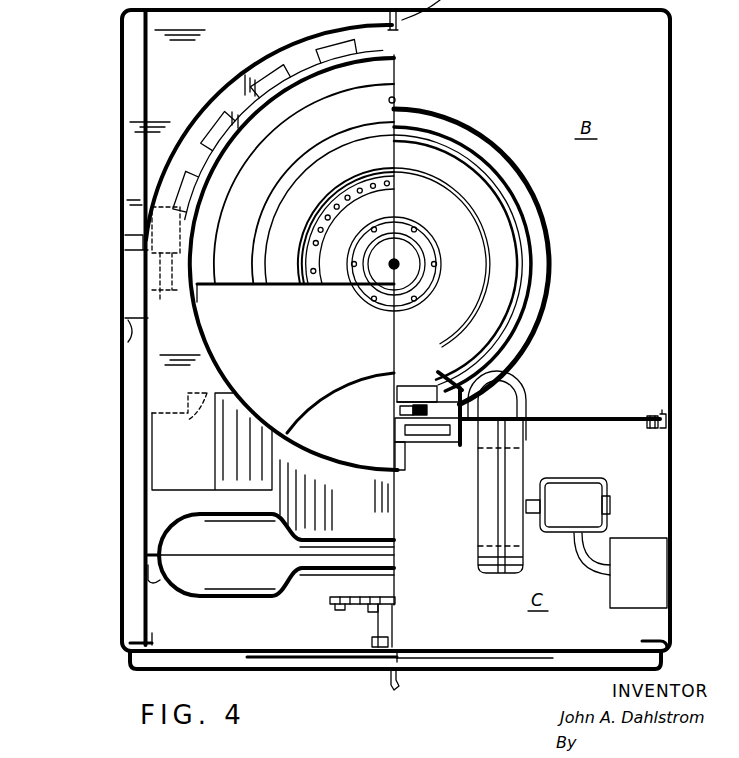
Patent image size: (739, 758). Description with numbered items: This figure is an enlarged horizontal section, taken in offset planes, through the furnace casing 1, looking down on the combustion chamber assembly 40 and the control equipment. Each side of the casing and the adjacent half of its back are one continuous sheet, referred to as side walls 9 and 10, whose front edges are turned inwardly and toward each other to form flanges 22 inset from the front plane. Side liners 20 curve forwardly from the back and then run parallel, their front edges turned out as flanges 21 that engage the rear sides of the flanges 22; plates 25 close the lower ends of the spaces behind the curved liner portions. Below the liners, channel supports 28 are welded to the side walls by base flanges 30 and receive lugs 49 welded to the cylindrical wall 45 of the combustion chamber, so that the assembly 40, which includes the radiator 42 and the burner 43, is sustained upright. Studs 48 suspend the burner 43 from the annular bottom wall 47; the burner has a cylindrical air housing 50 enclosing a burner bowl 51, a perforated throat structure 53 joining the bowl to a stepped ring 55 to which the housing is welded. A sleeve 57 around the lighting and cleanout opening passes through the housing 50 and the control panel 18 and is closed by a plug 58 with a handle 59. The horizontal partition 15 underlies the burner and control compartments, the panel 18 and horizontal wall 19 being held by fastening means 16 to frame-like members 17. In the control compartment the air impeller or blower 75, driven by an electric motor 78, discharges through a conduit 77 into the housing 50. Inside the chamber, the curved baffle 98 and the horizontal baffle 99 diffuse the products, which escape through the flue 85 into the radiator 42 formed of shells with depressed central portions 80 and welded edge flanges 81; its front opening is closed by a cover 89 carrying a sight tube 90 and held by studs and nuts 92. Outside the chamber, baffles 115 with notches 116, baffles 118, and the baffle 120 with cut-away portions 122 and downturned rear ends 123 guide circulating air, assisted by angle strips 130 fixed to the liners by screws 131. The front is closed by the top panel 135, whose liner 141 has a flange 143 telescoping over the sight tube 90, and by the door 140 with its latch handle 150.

The casing 1 is at (684, 142).
The side wall 9 is at (125, 183).
The side wall 10 is at (672, 215).
The horizontal partition 15 is at (648, 318).
The fastening means 16 is at (668, 428).
The frame-like members 17 is at (646, 432).
The control panel 18 is at (606, 416).
The horizontal wall 19 is at (295, 636).
The side liners 20 is at (208, 100).
The flanges 21 is at (128, 636).
The flanges 22 is at (150, 640).
The plates 25 is at (155, 73).
The supports 28 is at (135, 252).
The base flanges 30 is at (127, 335).
The combustion chamber assembly 40 is at (410, 73).
The radiator 42 is at (246, 596).
The burner 43 is at (557, 288).
The cylindrical wall 45 is at (313, 83).
The annular bottom wall 47 is at (216, 218).
The studs 48 is at (396, 100).
The lugs 49 is at (166, 253).
The air housing 50 is at (525, 205).
The burner bowl 51 is at (482, 170).
The perforated throat structure 53 is at (392, 178).
The stepped ring 55 is at (397, 140).
The sleeve 57 is at (440, 380).
The plug 58 is at (393, 412).
The handle 59 is at (400, 462).
The air impeller or blower 75 is at (490, 520).
The conduit 77 is at (518, 402).
The electric motor 78 is at (582, 488).
The depressed central portions 80 is at (360, 568).
The edge flanges 81 is at (148, 560).
The flue 85 is at (385, 498).
The cover 89 is at (325, 600).
The sight tube 90 is at (396, 618).
The studs and nuts 92 is at (343, 606).
The baffle 98 is at (362, 381).
The baffle 99 is at (333, 320).
The baffles 115 is at (245, 73).
The notches 116 is at (250, 130).
The baffles 118 is at (160, 386).
The baffle 120 is at (152, 500).
The cut-away portions 122 is at (143, 403).
The downturned rear ends 123 is at (179, 415).
The angle strips 130 is at (172, 562).
The screws 131 is at (160, 582).
The top panel 135 is at (148, 676).
The door 140 is at (440, 668).
The liner 141 is at (245, 655).
The flange 143 is at (397, 642).
The handle 150 is at (390, 693).